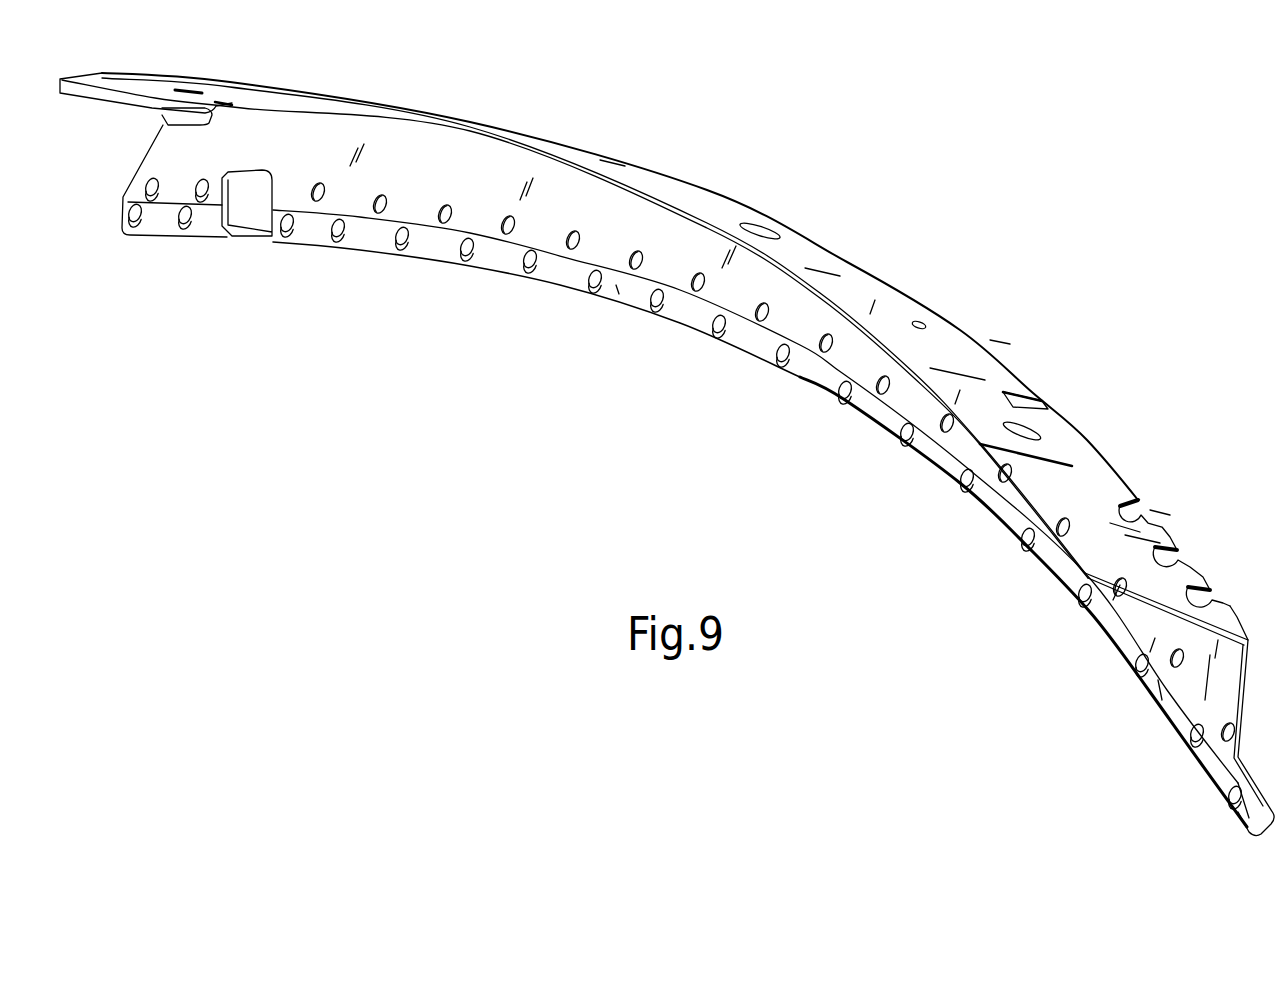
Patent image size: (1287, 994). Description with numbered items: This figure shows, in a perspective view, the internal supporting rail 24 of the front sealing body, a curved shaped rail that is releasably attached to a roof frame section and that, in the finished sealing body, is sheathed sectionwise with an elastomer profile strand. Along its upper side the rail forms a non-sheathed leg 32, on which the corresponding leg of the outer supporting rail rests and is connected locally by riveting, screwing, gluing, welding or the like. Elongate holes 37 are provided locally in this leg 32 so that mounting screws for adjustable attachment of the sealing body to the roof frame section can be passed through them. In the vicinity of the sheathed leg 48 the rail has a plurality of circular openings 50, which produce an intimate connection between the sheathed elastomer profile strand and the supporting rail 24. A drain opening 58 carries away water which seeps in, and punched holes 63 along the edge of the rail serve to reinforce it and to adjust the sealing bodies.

The supporting rail 24 is at (833, 251).
The leg 32 is at (872, 290).
The elongate hole 37 is at (760, 222).
The sheathed leg 48 is at (565, 272).
The circular openings 50 is at (775, 362).
The drain opening 58 is at (252, 205).
The punched holes 63 is at (1215, 594).